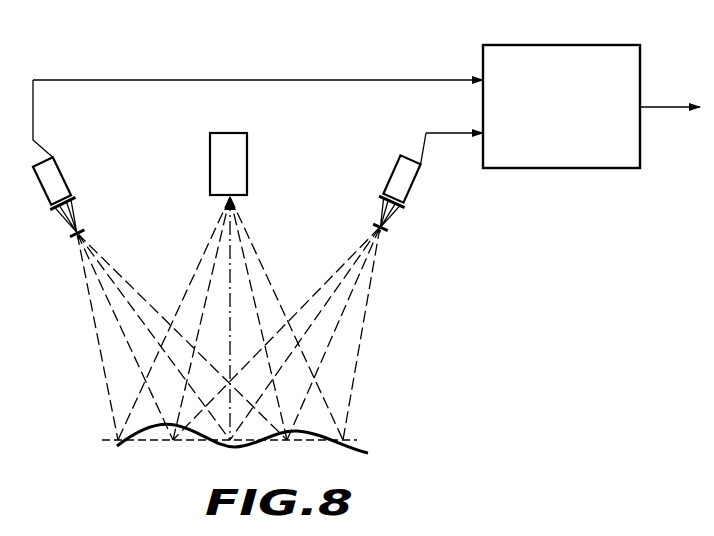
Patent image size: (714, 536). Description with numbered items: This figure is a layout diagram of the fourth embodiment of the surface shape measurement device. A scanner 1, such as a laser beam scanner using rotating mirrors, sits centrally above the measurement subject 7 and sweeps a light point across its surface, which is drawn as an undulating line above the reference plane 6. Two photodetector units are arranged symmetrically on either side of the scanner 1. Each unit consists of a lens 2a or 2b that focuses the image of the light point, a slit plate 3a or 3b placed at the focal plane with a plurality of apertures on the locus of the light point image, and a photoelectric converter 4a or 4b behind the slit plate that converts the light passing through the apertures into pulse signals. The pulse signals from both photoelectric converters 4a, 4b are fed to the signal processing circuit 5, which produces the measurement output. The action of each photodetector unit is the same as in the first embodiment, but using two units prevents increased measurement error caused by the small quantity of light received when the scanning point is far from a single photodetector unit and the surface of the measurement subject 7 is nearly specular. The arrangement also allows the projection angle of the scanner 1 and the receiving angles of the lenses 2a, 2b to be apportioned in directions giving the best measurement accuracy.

The scanner 1 is at (290, 128).
The lens 2a is at (80, 228).
The lens 2b is at (376, 226).
The slit plate 3a is at (58, 208).
The slit plate 3b is at (402, 208).
The photoelectric converter 4a is at (42, 188).
The photoelectric converter 4b is at (414, 188).
The signal processing circuit 5 is at (510, 165).
The reference plane 6 is at (147, 442).
The measurement subject 7 is at (124, 432).